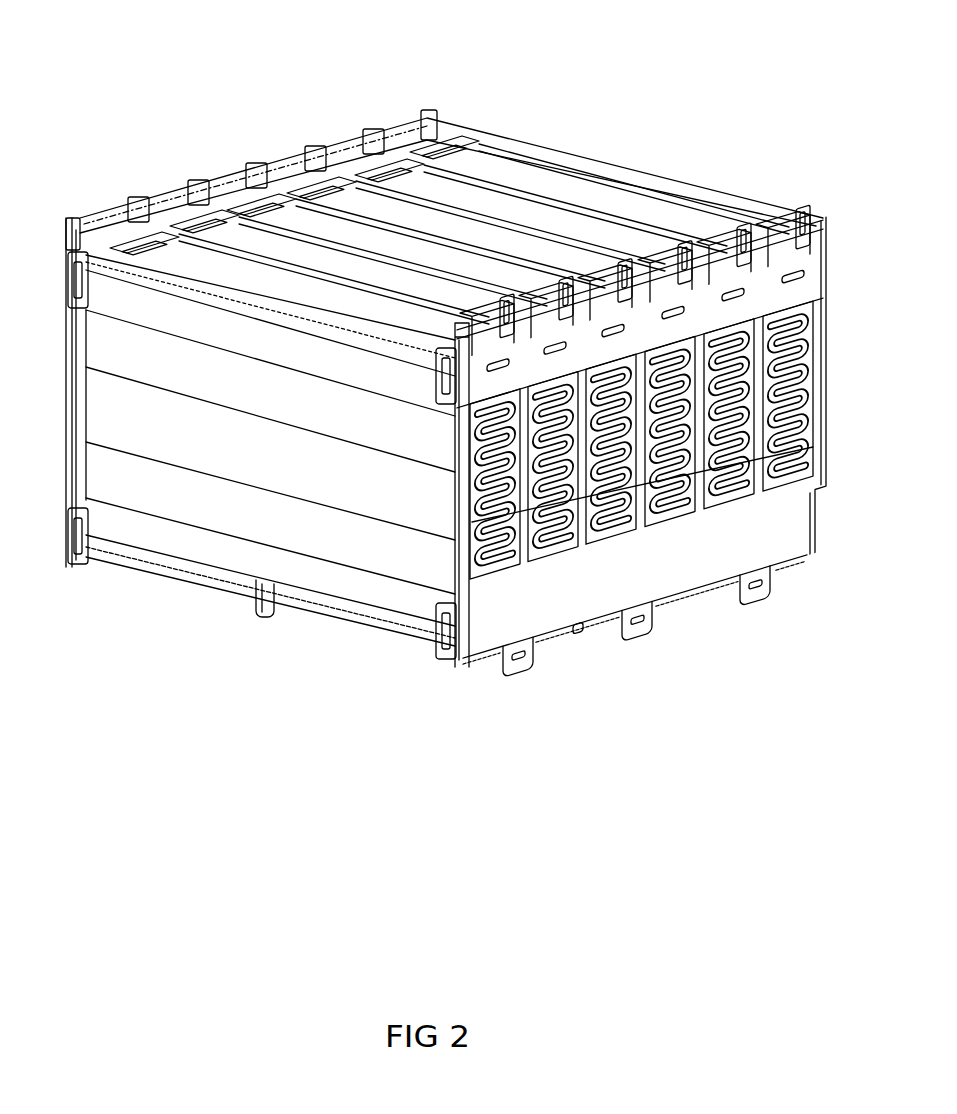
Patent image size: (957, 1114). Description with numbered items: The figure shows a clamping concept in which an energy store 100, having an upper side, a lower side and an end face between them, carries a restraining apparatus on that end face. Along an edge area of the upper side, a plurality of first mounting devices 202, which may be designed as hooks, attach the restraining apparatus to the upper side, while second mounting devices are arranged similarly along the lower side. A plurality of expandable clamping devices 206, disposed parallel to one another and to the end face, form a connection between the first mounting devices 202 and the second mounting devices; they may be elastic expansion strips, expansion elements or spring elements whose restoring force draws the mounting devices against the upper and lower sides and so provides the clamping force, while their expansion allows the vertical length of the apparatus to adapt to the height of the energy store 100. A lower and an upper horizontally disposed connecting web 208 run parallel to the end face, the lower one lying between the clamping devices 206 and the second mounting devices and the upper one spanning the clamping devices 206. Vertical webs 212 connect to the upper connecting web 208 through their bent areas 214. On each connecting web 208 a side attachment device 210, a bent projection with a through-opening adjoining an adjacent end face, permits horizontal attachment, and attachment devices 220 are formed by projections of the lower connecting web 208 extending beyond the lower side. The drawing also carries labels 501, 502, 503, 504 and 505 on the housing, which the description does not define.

The energy store 100 is at (526, 96).
The first mounting device 202 is at (727, 237).
The expandable clamping device 206 is at (620, 452).
The horizontally disposed connecting web 208 is at (676, 290).
The side attachment device 210 is at (445, 403).
The vertical web 212 is at (757, 470).
The bent area 214 is at (820, 214).
The attachment device 220 is at (503, 665).
The top cover rib 501 is at (290, 250).
The bottom rail 502 is at (347, 643).
The front plate 503 is at (557, 577).
The side wall 504 is at (217, 487).
The top cover 505 is at (543, 143).